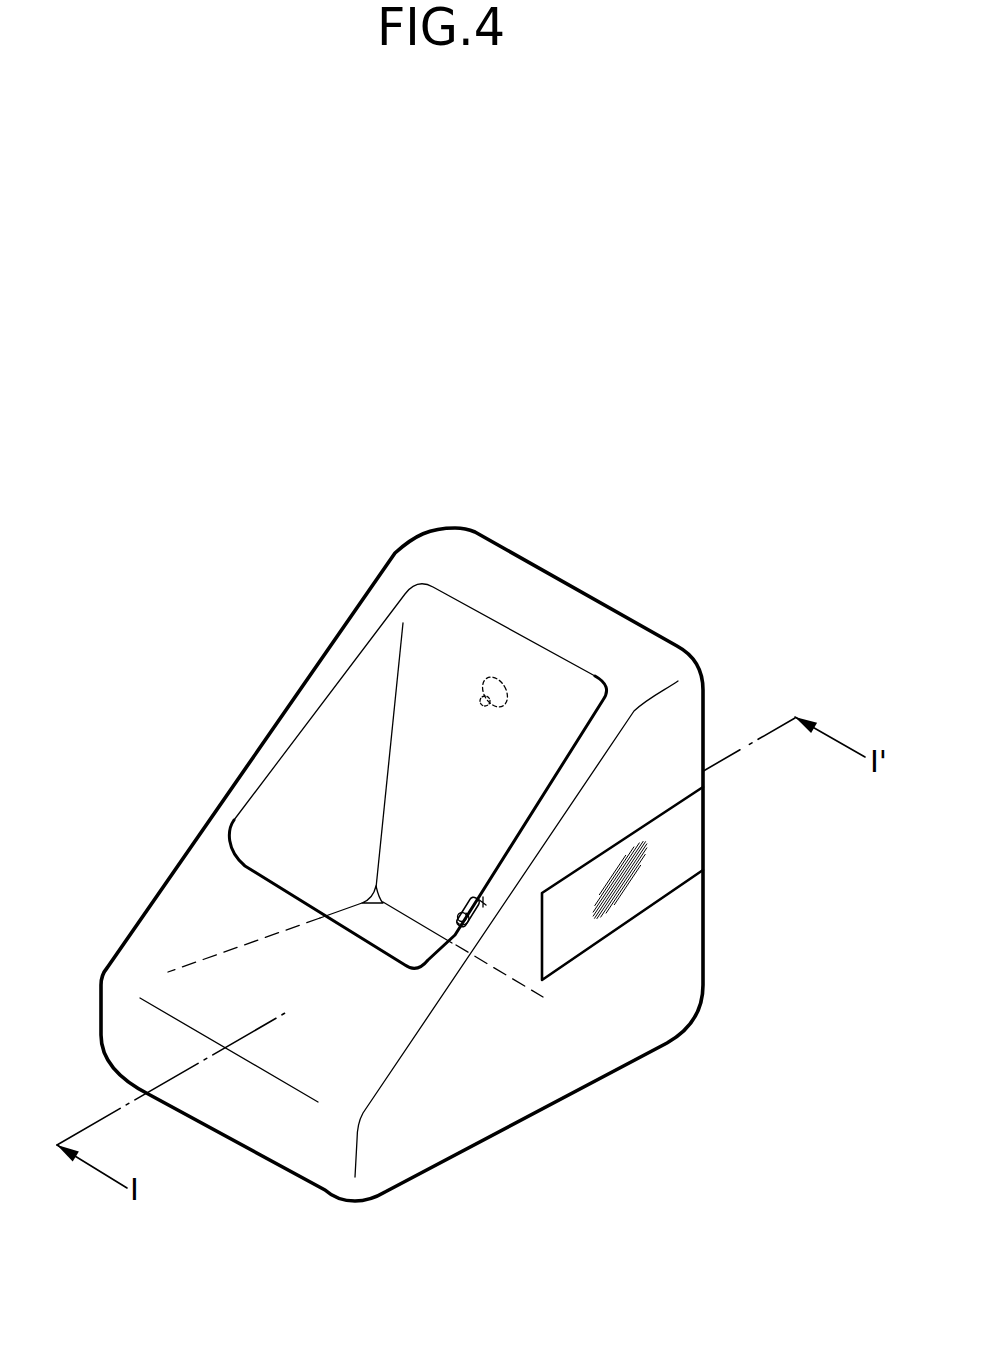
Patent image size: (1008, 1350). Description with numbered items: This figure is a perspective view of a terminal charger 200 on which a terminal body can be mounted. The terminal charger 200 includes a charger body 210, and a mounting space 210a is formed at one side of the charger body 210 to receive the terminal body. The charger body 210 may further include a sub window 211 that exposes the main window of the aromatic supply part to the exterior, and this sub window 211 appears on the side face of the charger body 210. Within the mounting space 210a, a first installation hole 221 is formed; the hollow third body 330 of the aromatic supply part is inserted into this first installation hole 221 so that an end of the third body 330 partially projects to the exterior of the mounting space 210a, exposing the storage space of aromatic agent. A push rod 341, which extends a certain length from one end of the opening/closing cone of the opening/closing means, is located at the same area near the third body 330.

The terminal charger 200 is at (328, 427).
The charger body 210 is at (403, 1155).
The mounting space 210a is at (286, 814).
The sub window 211 is at (653, 880).
The first installation hole 221 is at (483, 902).
The third body 330 is at (483, 920).
The push rod 341 is at (458, 928).